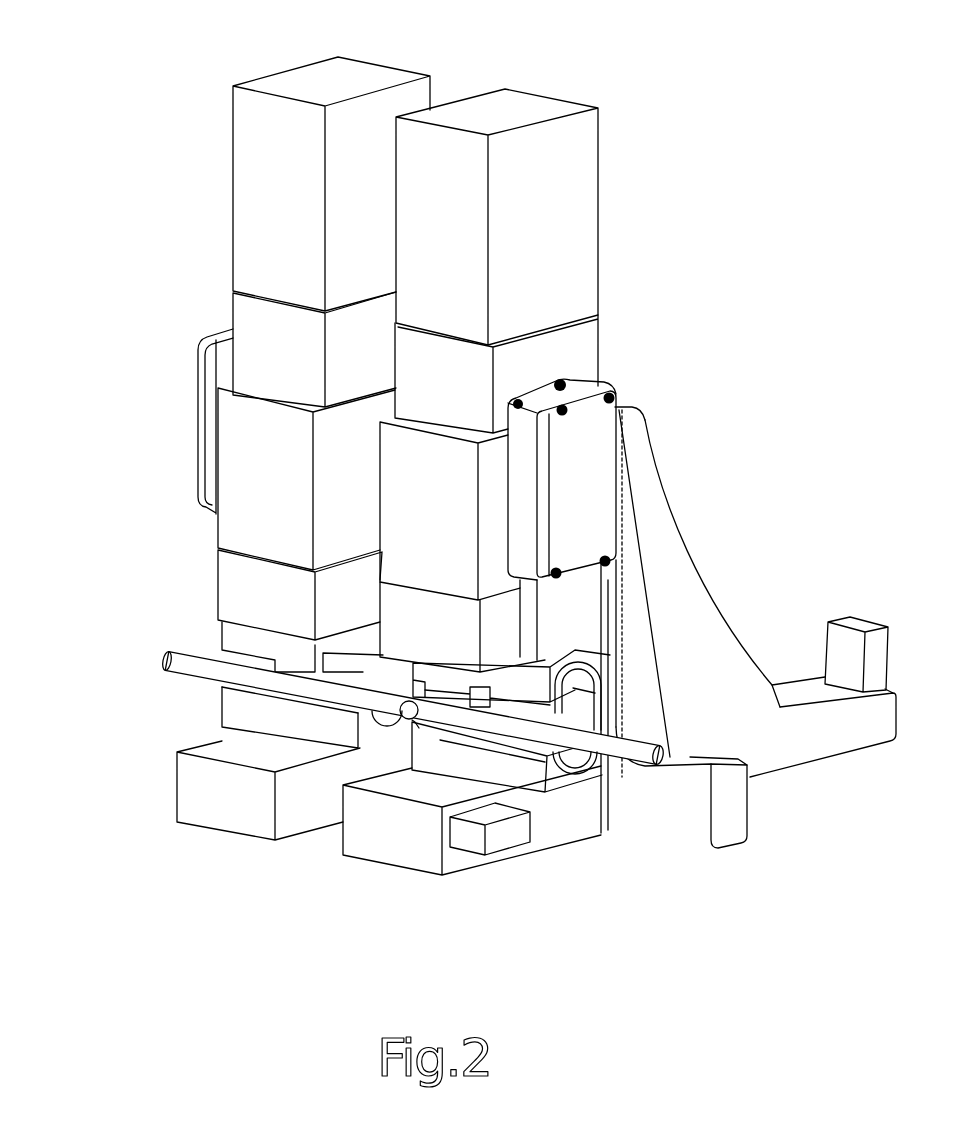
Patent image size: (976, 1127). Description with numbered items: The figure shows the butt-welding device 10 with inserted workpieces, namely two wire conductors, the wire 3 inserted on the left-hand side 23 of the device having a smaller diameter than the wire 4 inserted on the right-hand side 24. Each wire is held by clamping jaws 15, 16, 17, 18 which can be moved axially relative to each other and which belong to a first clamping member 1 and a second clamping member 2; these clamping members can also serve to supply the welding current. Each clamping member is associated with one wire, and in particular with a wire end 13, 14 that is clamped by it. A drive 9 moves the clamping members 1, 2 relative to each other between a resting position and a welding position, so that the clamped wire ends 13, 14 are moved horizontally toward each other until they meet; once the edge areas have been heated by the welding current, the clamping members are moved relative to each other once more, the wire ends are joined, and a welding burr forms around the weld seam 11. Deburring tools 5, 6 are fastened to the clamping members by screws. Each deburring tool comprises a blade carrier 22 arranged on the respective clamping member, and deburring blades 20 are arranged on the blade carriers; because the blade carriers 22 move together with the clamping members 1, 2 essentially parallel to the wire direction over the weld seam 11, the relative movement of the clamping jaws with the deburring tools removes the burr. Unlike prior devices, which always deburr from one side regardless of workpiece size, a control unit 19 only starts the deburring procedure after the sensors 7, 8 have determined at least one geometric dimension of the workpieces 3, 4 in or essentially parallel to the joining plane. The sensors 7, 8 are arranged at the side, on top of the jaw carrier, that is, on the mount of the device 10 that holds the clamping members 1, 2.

The first clamping member 1 is at (178, 638).
The second clamping member 2 is at (577, 813).
The wire 3 is at (183, 662).
The wire 4 is at (640, 752).
The deburring tool 5 is at (360, 713).
The deburring tool 6 is at (420, 735).
The sensor 7 is at (206, 371).
The sensor 8 is at (582, 502).
The drive 9 is at (475, 835).
The butt-welding device 10 is at (213, 178).
The weld seam 11 is at (402, 723).
The wire end 13 is at (383, 717).
The wire end 14 is at (413, 721).
The clamping jaw 15 is at (202, 614).
The clamping jaw 16 is at (227, 707).
The clamping jaw 17 is at (621, 608).
The clamping jaw 18 is at (527, 767).
The control unit 19 is at (875, 648).
The deburring blade 20 is at (532, 687).
The blade carrier 22 is at (353, 662).
The left-hand side 23 is at (320, 78).
The right-hand side 24 is at (485, 115).